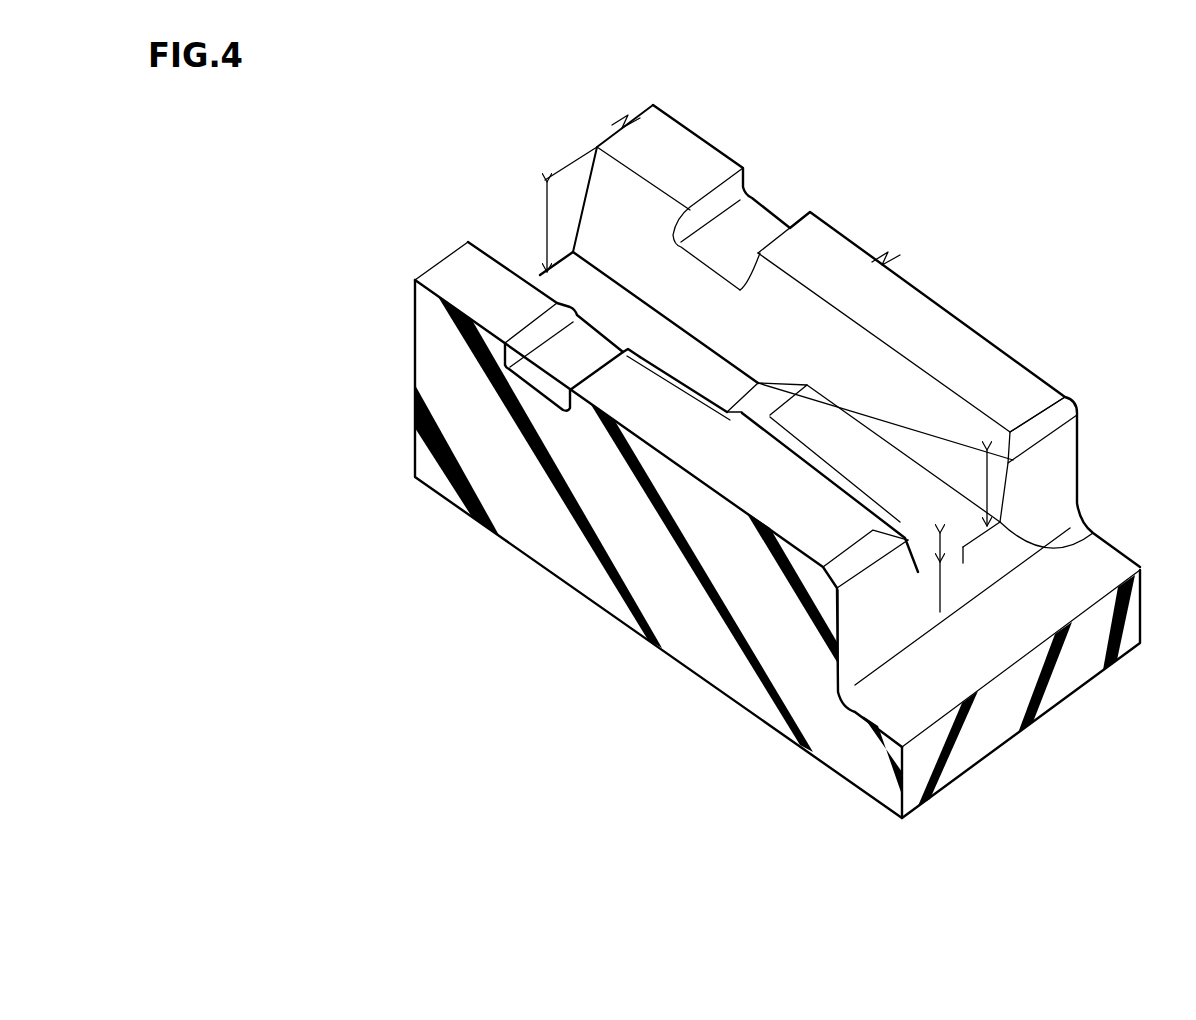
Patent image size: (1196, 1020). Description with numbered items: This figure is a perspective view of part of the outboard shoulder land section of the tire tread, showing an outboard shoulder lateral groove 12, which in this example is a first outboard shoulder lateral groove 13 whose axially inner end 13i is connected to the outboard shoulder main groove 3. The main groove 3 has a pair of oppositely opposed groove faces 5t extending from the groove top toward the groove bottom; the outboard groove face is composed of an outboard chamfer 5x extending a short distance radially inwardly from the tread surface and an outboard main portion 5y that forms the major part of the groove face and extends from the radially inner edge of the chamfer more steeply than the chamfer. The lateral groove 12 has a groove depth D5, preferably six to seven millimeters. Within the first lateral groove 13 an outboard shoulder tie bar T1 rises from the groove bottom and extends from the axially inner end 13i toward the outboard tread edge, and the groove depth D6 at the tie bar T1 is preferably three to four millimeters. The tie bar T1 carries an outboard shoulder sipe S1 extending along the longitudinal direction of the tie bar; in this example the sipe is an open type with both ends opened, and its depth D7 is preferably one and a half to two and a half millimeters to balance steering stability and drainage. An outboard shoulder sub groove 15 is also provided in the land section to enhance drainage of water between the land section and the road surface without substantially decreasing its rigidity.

The outboard shoulder lateral groove 12 is at (510, 228).
The first outboard shoulder lateral groove 13 is at (510, 228).
The outboard shoulder sub groove 15 is at (552, 368).
The outboard shoulder main groove 3 is at (1010, 636).
The axially inner end of first outboard shoulder lateral groove 13i is at (1078, 531).
The outboard shoulder tie bar T1 is at (876, 508).
The outboard shoulder sipe S1 is at (957, 563).
The outboard chamfer 5x is at (1052, 410).
The outboard main portion 5y is at (1060, 470).
The groove face 5t is at (860, 638).
The groove depth of outboard shoulder lateral groove D5 is at (562, 209).
The groove depth at outboard shoulder tie bar D6 is at (984, 488).
The depth of sipe D7 is at (919, 572).